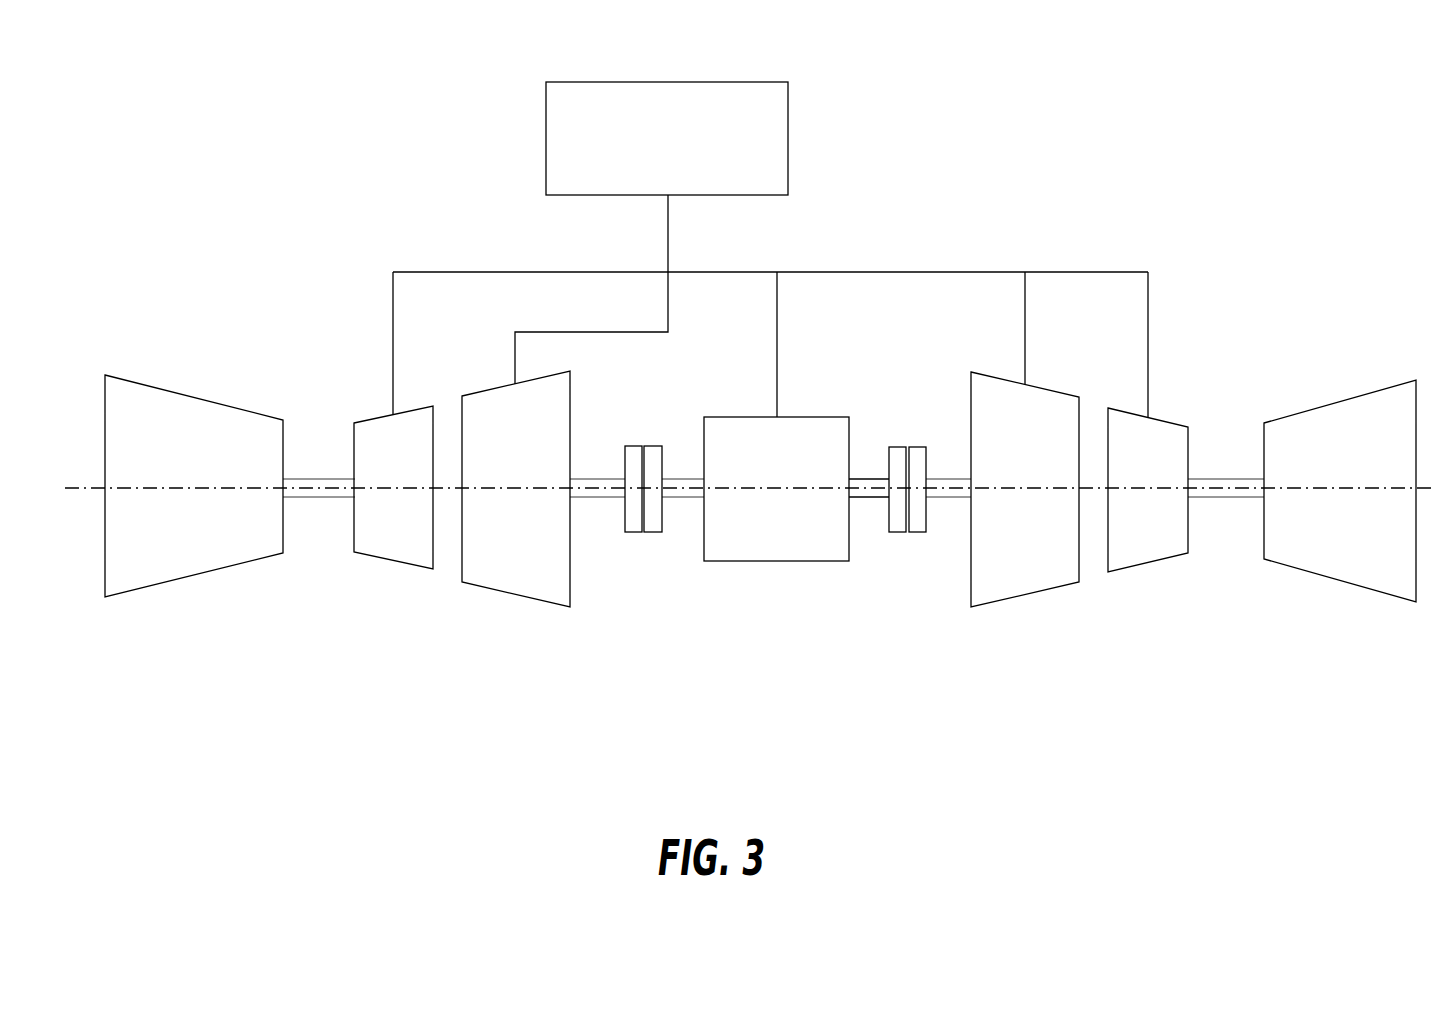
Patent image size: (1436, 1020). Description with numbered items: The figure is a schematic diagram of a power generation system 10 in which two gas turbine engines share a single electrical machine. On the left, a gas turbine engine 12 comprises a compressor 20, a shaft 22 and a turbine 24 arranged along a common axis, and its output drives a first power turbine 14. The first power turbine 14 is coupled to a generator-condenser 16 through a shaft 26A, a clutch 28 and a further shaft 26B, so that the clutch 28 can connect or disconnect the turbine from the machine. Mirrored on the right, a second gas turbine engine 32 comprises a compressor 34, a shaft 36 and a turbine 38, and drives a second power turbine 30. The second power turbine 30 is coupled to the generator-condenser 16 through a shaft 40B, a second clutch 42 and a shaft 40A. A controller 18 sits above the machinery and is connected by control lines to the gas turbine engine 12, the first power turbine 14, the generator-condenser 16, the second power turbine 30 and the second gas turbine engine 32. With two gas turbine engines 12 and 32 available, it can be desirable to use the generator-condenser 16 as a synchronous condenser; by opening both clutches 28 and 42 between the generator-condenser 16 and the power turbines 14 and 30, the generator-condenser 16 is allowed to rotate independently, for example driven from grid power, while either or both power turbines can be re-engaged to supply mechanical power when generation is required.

The power generation system 10 is at (1132, 170).
The gas turbine engine 12 is at (212, 338).
The first power turbine 14 is at (505, 590).
The generator-condenser 16 is at (777, 561).
The controller 18 is at (545, 139).
The compressor 20 is at (148, 590).
The shaft 22 is at (300, 478).
The turbine 24 is at (375, 555).
The shaft 26A is at (603, 497).
The shaft 26B is at (683, 497).
The clutch 28 is at (653, 444).
The second power turbine 30 is at (1025, 593).
The second gas turbine engine 32 is at (1240, 388).
The compressor 34 is at (1338, 580).
The shaft 36 is at (1225, 498).
The turbine 38 is at (1146, 562).
The shaft 40A is at (868, 497).
The shaft 40B is at (947, 497).
The clutch 42 is at (893, 441).